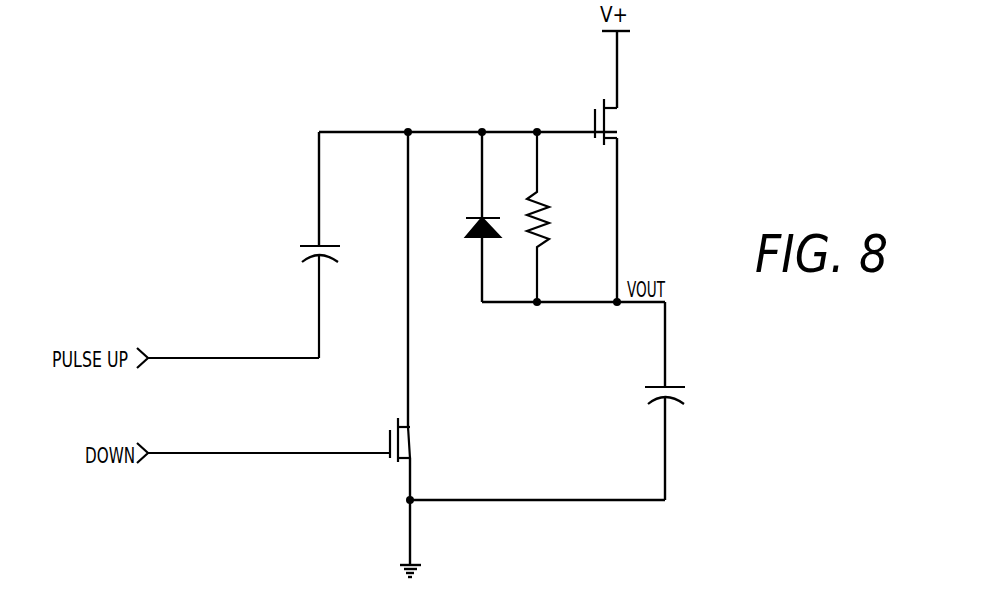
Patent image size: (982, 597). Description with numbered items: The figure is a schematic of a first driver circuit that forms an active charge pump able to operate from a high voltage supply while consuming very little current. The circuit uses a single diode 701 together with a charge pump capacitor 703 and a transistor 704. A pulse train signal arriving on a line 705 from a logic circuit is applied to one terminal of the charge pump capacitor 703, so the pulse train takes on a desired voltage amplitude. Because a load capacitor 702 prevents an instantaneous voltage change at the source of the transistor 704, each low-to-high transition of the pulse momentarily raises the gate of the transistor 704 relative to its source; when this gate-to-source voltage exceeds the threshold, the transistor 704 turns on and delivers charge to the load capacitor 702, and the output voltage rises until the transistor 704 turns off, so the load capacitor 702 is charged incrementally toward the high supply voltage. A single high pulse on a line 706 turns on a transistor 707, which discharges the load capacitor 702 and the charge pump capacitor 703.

The diode 701 is at (466, 232).
The load capacitor 702 is at (677, 386).
The charge pump capacitor 703 is at (300, 254).
The transistor 704 is at (618, 125).
The line 705 is at (198, 357).
The line 706 is at (220, 452).
The transistor 707 is at (408, 443).